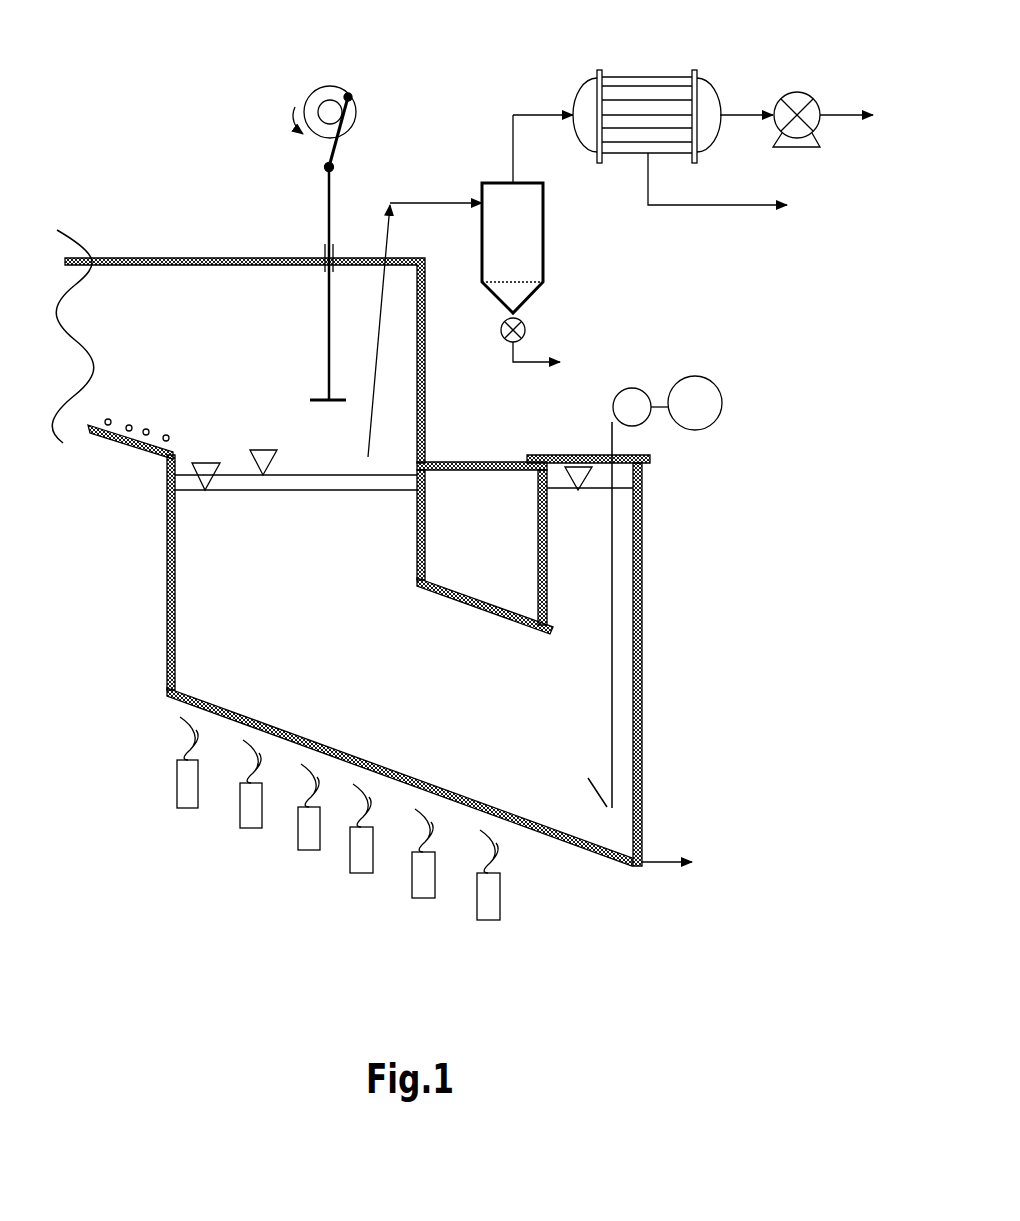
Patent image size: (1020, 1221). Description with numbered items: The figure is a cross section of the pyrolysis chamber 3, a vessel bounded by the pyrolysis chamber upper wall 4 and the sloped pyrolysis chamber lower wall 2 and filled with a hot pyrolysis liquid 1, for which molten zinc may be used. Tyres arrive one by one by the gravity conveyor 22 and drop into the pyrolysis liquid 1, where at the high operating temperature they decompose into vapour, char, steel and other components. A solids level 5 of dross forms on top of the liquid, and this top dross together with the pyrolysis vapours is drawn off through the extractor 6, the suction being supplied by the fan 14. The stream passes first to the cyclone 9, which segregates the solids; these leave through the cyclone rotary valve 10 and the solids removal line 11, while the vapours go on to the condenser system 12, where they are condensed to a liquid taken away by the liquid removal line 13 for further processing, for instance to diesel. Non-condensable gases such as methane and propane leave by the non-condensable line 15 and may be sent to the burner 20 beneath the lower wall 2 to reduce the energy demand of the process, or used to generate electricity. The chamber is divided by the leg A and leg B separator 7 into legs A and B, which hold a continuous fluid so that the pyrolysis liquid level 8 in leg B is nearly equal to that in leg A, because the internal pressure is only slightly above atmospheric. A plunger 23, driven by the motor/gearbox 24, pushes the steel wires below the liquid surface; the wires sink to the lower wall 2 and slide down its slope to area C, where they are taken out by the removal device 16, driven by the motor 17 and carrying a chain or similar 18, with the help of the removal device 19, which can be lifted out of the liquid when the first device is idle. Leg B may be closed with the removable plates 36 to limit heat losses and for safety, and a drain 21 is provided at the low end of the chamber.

The pyrolysis liquid 1 is at (193, 585).
The pyrolysis chamber lower wall 2 is at (217, 717).
The pyrolysis chamber 3 is at (177, 295).
The pyrolysis chamber upper wall 4 is at (250, 257).
The solids level (dross) on pyrolysis liquid 5 is at (263, 452).
The extractor 6 is at (370, 417).
The leg A and leg B separator 7 is at (482, 460).
The pyrolysis liquid level in leg B (or A) 8 is at (205, 492).
The cyclone 9 is at (545, 232).
The cyclone rotary valve 10 is at (522, 312).
The solids removal line 11 is at (543, 355).
The condenser system 12 is at (647, 76).
The liquid removal line 13 is at (750, 213).
The fan 14 is at (797, 92).
The non-condensable line 15 is at (850, 120).
The removal device 16 is at (637, 380).
The motor 17 is at (722, 402).
The chain or similar for removal device 18 is at (615, 638).
The removal device 19 is at (612, 778).
The burner 20 is at (362, 875).
The drain 21 is at (665, 867).
The gravity conveyor 22 is at (147, 427).
The plunger 23 is at (333, 175).
The motor/gearbox for plunger 24 is at (310, 93).
The removable plates for crane access 36 is at (650, 460).